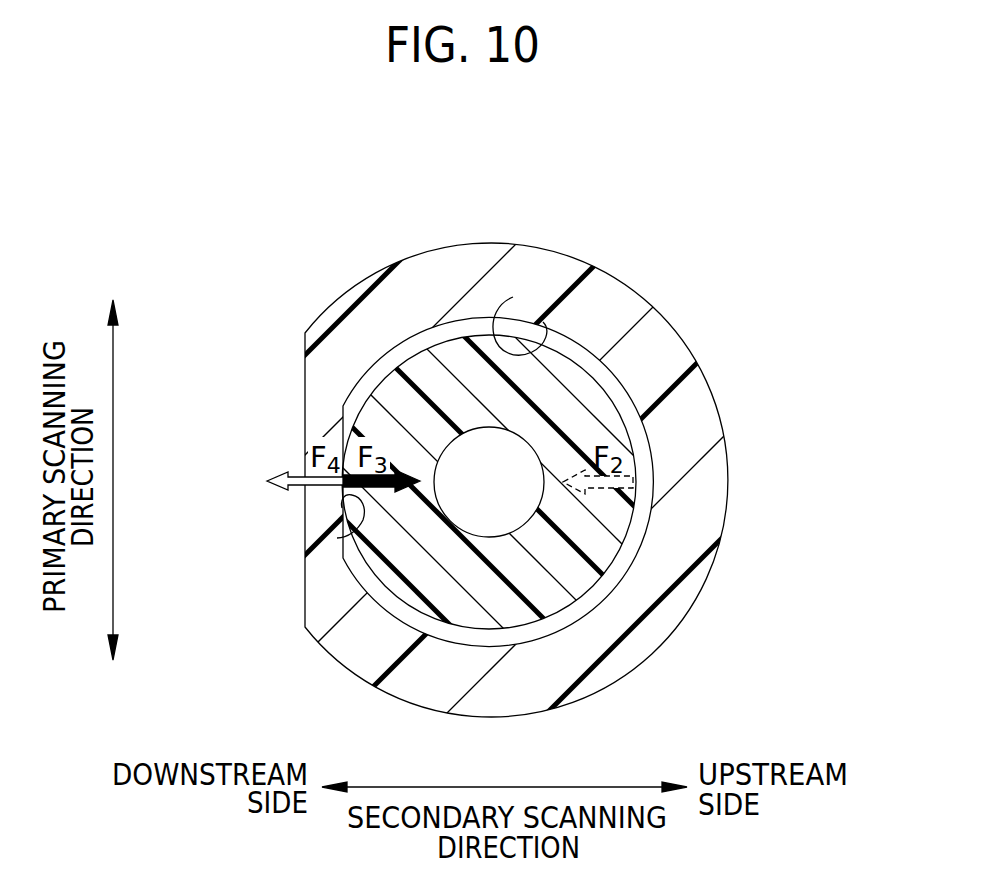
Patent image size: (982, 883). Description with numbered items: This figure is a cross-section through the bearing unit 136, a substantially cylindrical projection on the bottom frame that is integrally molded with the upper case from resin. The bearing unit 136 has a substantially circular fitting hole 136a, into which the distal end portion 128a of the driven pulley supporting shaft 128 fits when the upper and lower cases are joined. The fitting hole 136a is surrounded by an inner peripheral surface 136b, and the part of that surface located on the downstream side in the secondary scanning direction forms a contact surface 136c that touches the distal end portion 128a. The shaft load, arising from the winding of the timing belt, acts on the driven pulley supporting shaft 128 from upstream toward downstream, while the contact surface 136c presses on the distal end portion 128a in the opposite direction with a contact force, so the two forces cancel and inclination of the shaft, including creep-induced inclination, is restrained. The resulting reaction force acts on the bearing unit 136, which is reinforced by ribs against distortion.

The bearing unit 136 is at (660, 348).
The fitting hole 136a is at (662, 481).
The inner peripheral surface 136b is at (513, 297).
The contact surface 136c is at (337, 538).
The driven pulley supporting shaft 128 is at (577, 577).
The distal end portion 128a is at (501, 500).